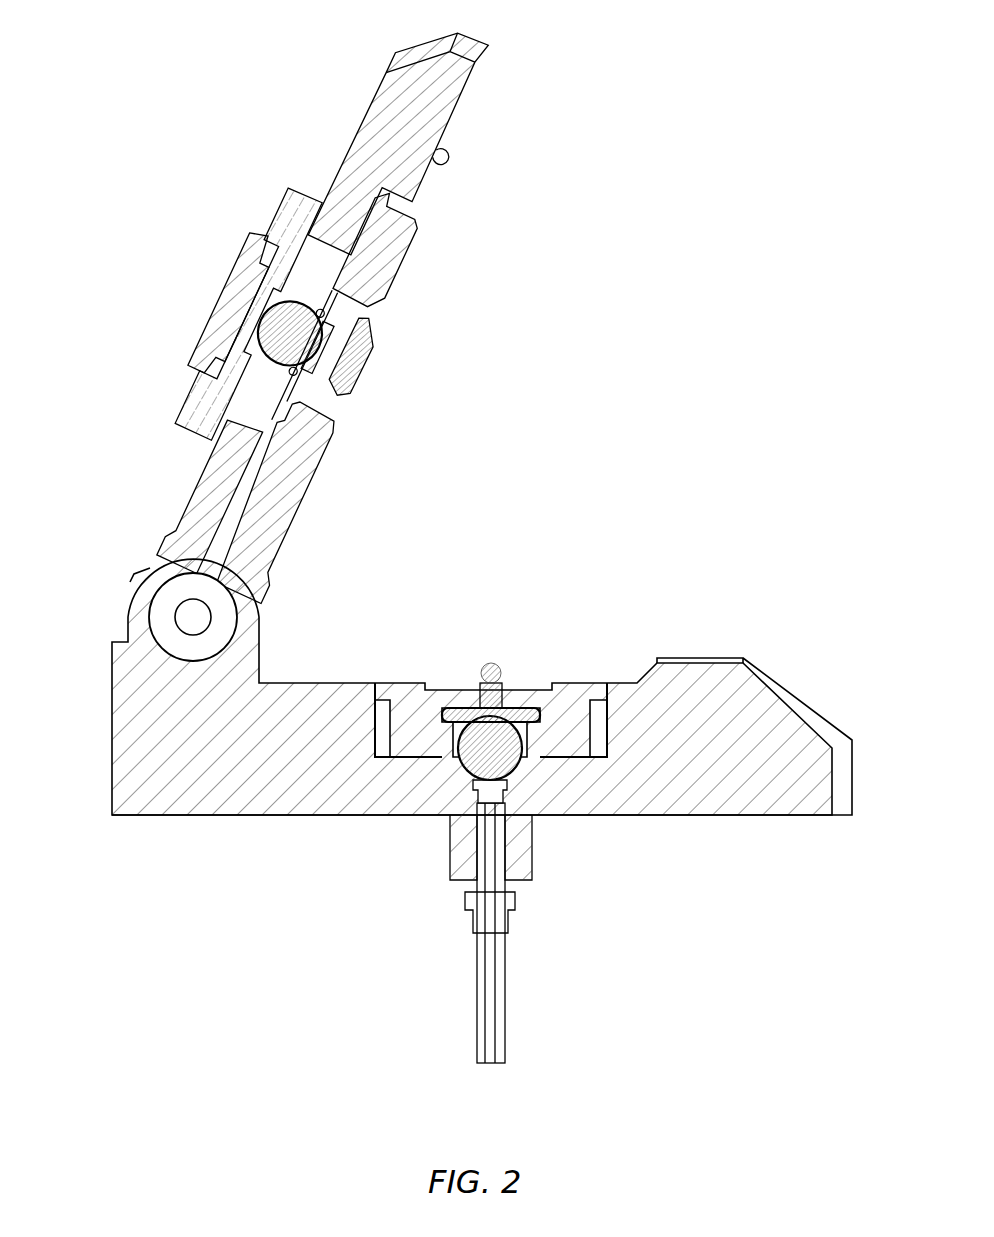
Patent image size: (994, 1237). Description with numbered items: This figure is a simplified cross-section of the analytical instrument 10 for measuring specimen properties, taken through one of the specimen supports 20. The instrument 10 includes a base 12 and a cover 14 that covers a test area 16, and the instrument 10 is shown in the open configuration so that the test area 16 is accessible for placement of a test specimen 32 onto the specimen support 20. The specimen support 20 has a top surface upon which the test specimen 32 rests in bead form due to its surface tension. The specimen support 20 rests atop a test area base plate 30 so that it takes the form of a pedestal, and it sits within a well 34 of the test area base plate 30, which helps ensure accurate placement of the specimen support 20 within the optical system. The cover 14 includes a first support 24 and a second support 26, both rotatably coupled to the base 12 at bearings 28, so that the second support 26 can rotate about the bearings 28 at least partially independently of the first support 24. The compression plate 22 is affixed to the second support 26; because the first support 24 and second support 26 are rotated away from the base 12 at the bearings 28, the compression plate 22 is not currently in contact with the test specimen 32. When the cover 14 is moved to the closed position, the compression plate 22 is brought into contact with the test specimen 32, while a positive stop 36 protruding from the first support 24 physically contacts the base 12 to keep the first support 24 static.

The analytical instrument 10 is at (666, 314).
The base 12 is at (726, 732).
The cover 14 is at (283, 171).
The test area 16 is at (592, 648).
The specimen support 20 is at (504, 683).
The compression plate 22 is at (367, 378).
The first support 24 is at (479, 68).
The second support 26 is at (410, 268).
The bearing 28 is at (158, 580).
The test area base plate 30 is at (378, 683).
The test specimen 32 is at (484, 668).
The well 34 is at (478, 700).
The positive stop 36 is at (450, 166).